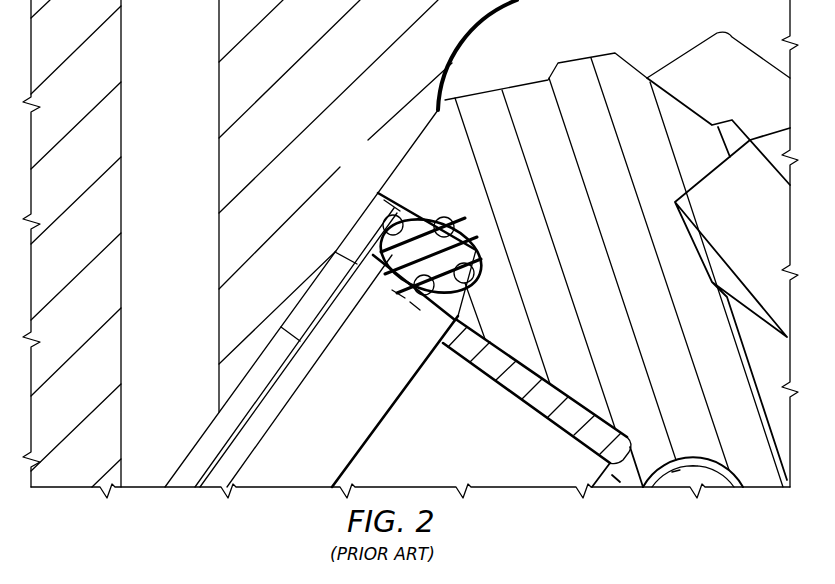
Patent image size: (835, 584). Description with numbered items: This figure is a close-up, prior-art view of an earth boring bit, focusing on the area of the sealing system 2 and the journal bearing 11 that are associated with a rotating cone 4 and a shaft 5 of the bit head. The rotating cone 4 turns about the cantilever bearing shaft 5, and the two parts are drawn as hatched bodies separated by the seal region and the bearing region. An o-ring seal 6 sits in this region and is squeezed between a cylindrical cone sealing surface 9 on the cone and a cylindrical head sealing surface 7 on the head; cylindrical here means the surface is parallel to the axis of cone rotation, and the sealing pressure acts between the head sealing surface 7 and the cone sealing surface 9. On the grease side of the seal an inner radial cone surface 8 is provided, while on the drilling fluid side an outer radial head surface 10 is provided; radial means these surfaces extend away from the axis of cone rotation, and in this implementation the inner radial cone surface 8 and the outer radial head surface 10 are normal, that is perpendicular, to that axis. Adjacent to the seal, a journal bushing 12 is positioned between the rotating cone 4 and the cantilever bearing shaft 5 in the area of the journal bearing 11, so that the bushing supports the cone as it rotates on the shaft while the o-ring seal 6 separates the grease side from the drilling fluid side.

The sealing system 2 is at (463, 213).
The rotating cone 4 is at (606, 296).
The shaft 5 is at (338, 420).
The o-ring seal 6 is at (390, 205).
The cylindrical head sealing surface 7 is at (440, 312).
The inner radial cone surface 8 is at (472, 262).
The cylindrical cone sealing surface 9 is at (444, 221).
The outer radial head surface 10 is at (390, 280).
The journal bearing 11 is at (482, 387).
The journal bushing 12 is at (517, 383).